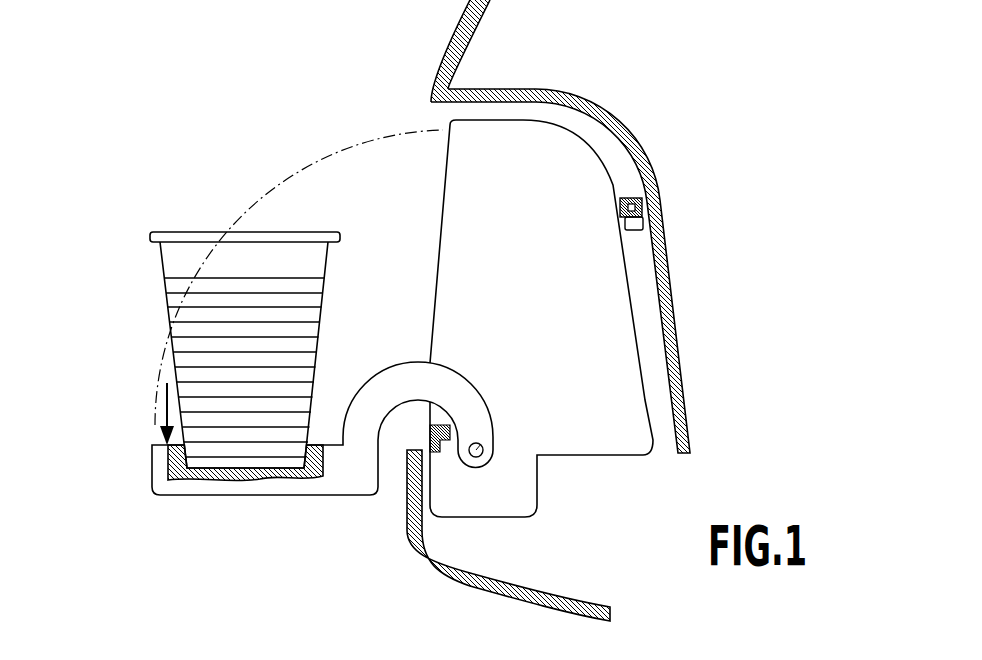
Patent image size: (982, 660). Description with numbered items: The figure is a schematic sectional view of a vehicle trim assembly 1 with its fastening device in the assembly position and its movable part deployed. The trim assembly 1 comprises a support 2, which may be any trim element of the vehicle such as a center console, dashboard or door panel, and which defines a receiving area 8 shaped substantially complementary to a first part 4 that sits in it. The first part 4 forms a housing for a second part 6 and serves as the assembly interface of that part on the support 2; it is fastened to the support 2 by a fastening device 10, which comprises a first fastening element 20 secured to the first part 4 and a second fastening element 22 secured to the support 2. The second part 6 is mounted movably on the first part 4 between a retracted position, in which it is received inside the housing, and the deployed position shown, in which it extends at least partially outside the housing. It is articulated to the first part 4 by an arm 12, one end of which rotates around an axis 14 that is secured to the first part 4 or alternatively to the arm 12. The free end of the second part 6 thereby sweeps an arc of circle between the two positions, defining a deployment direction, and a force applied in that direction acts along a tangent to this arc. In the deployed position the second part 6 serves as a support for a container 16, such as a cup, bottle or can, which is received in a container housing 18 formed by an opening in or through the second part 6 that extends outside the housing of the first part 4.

The vehicle trim assembly 1 is at (303, 102).
The support 2 is at (482, 21).
The first part 4 is at (623, 373).
The second part 6 is at (335, 492).
The receiving area 8 is at (582, 136).
The fastening device 10 is at (728, 190).
The arm 12 is at (400, 375).
The axis 14 is at (482, 446).
The container 16 is at (175, 260).
The container housing 18 is at (168, 457).
The first fastening element 20 is at (645, 206).
The second fastening element 22 is at (646, 226).